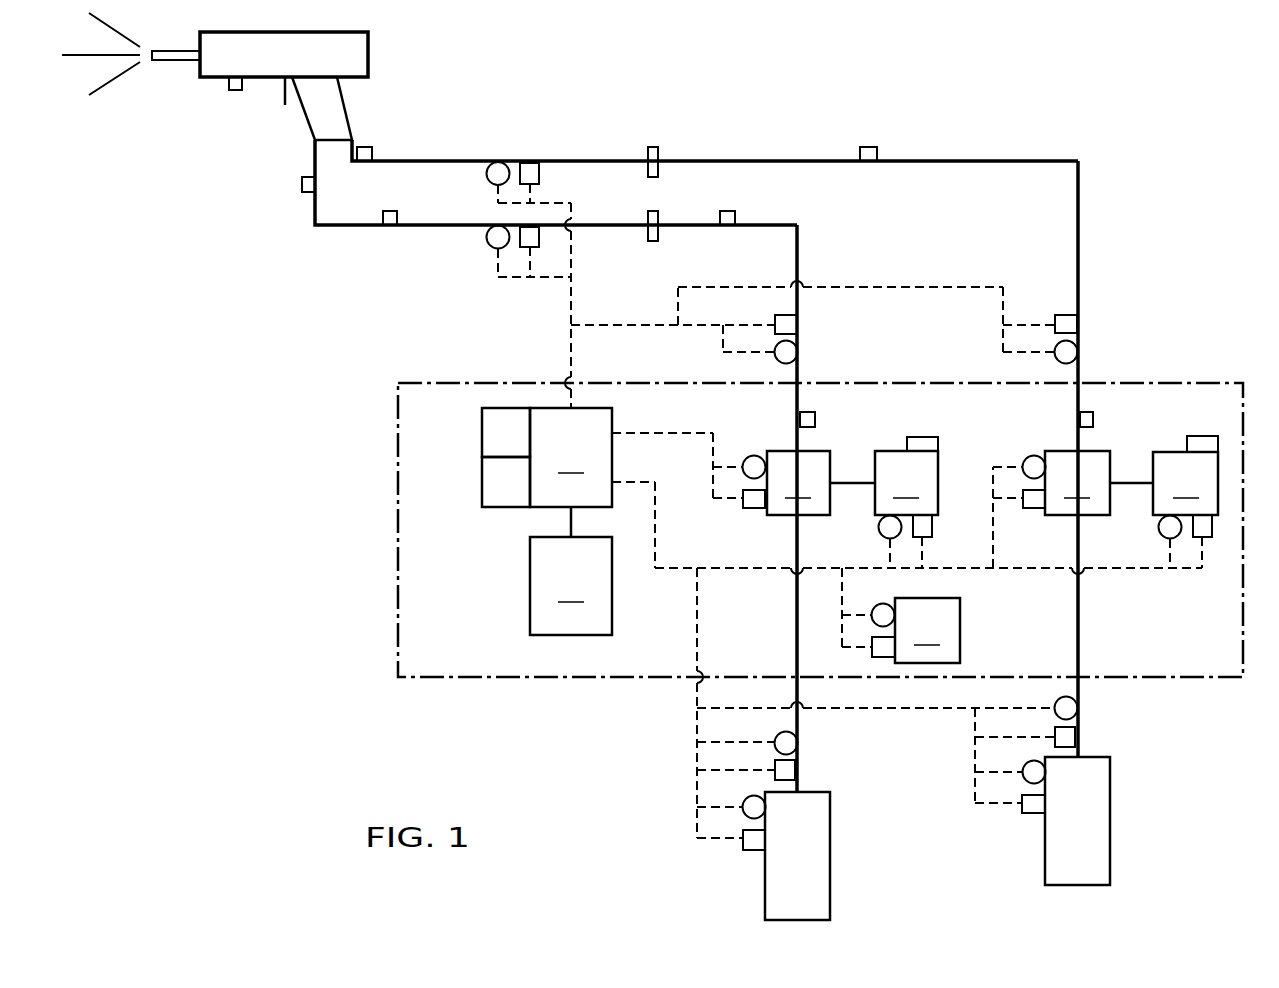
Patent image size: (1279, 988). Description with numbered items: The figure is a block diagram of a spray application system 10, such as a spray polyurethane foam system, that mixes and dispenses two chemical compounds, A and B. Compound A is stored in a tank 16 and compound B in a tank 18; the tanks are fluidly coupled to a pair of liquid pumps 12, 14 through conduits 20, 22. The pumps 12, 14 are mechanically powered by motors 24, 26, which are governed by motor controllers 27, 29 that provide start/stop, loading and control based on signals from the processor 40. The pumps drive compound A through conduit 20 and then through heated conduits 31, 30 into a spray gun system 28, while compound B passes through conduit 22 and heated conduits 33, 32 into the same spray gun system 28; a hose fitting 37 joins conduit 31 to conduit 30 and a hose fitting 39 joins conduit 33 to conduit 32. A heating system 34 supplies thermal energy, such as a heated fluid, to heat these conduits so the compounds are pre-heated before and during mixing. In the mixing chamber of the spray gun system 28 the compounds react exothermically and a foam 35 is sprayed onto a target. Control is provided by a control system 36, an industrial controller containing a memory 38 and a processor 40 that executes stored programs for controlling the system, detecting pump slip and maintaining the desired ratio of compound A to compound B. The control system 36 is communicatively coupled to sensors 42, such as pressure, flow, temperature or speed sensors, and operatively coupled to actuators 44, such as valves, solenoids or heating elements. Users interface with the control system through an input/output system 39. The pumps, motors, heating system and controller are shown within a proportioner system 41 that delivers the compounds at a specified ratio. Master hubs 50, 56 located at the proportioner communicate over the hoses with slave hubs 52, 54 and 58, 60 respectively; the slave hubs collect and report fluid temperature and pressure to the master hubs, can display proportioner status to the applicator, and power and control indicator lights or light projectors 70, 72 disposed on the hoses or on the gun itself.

The spray application system 10 is at (1189, 114).
The liquid pump 12 is at (821, 483).
The liquid pump 14 is at (1099, 483).
The tank 16 is at (830, 868).
The tank 18 is at (1110, 833).
The conduit 20 is at (797, 627).
The conduit 22 is at (1079, 635).
The motor 24 is at (906, 483).
The motor 26 is at (1185, 483).
The motor controller 27 is at (920, 437).
The spray gun system 28 is at (368, 54).
The motor controller 29 is at (1200, 436).
The heated conduit 30 is at (338, 228).
The heated conduit 31 is at (799, 247).
The heated conduit 32 is at (450, 161).
The heated conduit 33 is at (1080, 186).
The heating system 34 is at (927, 630).
The foam 35 is at (118, 103).
The control system 36 is at (571, 472).
The hose fitting 37 is at (653, 211).
The memory 38 is at (481, 432).
The hose fitting 39 is at (653, 147).
The processor 40 is at (481, 483).
The proportioner system 41 is at (1243, 532).
The sensor 42 is at (487, 181).
The actuator 44 is at (539, 171).
The master hub 50 is at (815, 420).
The slave hub 52 is at (728, 210).
The slave hub 54 is at (388, 228).
The master hub 56 is at (1093, 418).
The slave hub 58 is at (869, 147).
The slave hub 60 is at (373, 153).
The indicator light 70 is at (239, 90).
The indicator light 72 is at (302, 190).